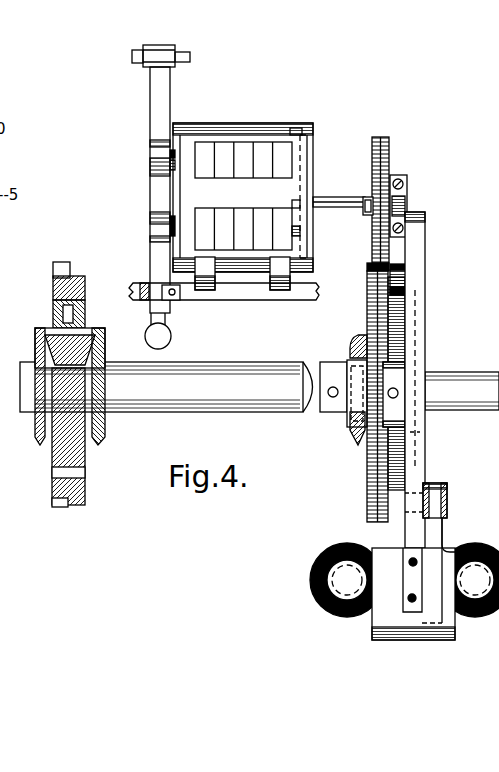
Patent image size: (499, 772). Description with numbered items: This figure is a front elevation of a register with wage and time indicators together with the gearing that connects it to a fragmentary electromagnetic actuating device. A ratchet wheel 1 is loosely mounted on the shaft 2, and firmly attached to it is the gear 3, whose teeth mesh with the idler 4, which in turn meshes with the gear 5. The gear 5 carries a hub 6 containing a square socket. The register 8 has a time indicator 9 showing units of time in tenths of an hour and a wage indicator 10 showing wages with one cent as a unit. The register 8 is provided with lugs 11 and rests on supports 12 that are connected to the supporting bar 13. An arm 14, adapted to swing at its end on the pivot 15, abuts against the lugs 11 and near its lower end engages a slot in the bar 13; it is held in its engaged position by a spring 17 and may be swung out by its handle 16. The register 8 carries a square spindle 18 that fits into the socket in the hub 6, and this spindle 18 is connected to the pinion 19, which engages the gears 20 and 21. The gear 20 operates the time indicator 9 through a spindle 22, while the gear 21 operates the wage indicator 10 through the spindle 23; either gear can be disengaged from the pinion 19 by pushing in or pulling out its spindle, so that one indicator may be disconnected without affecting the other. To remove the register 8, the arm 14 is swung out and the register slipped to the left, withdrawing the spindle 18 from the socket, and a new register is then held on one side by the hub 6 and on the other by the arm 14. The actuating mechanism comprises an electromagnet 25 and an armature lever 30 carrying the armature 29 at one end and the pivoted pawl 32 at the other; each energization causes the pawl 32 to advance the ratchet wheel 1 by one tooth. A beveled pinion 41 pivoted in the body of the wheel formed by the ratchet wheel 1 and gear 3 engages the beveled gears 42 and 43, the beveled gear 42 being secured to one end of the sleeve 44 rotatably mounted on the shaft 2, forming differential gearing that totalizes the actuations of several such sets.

The ratchet wheel 1 is at (390, 462).
The shaft 2 is at (106, 412).
The gear 3 is at (363, 473).
The idler 4 is at (387, 267).
The gear 5 is at (390, 144).
The hub 6 is at (368, 198).
The register 8 is at (189, 130).
The time indicator 9 is at (240, 148).
The wage indicator 10 is at (243, 250).
The lugs 11 is at (170, 162).
The supports 12 is at (206, 290).
The supporting bar 13 is at (256, 300).
The arm 14 is at (150, 112).
The pivot 15 is at (191, 57).
The handle 16 is at (145, 340).
The spring 17 is at (172, 300).
The square spindle 18 is at (329, 197).
The pinion 19 is at (302, 204).
The gear 20 is at (309, 150).
The gear 21 is at (307, 227).
The spindle 22 is at (294, 131).
The spindle 23 is at (292, 230).
The electromagnet 25 is at (312, 592).
The armature 29 is at (346, 592).
The armature lever 30 is at (426, 229).
The pawl 32 is at (398, 286).
The beveled pinion 41 is at (362, 334).
The beveled gear 42 is at (352, 352).
The beveled gear 43 is at (417, 435).
The sleeve 44 is at (308, 412).